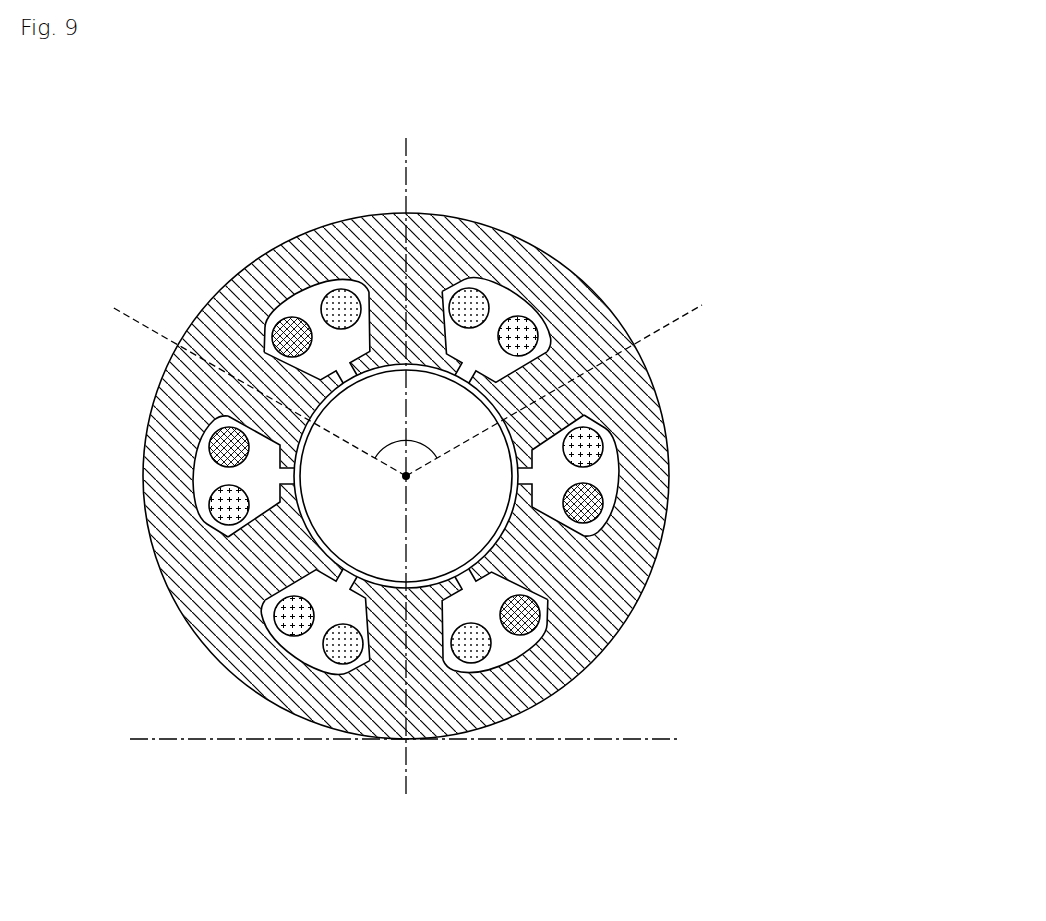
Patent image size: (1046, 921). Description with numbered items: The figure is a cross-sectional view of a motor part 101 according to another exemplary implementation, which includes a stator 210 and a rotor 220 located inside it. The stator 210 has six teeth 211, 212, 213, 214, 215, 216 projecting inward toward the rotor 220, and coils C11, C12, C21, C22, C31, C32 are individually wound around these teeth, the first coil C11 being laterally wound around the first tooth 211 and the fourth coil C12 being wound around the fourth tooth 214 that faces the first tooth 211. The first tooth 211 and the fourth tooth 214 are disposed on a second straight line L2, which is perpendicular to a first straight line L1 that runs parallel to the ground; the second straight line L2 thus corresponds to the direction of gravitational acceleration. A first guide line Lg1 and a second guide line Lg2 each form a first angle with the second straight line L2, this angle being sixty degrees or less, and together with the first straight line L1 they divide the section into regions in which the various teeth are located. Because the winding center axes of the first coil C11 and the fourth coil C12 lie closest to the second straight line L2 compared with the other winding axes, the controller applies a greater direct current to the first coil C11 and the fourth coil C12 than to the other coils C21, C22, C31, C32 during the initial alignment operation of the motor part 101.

The motor part 101 is at (427, 64).
The stator 210 is at (588, 322).
The first tooth 211 is at (428, 310).
The tooth 212 is at (550, 413).
The tooth 213 is at (570, 588).
The fourth tooth 214 is at (390, 635).
The tooth 215 is at (267, 555).
The tooth 216 is at (203, 315).
The rotor 220 is at (328, 525).
The first coil C11 is at (473, 303).
The fourth coil C12 is at (470, 645).
The coil C21 is at (523, 333).
The coil C22 is at (225, 508).
The coil C31 is at (597, 512).
The coil C32 is at (248, 272).
The first straight line L1 is at (421, 741).
The second straight line L2 is at (406, 455).
The first guide line Lg1 is at (573, 382).
The second guide line Lg2 is at (239, 383).